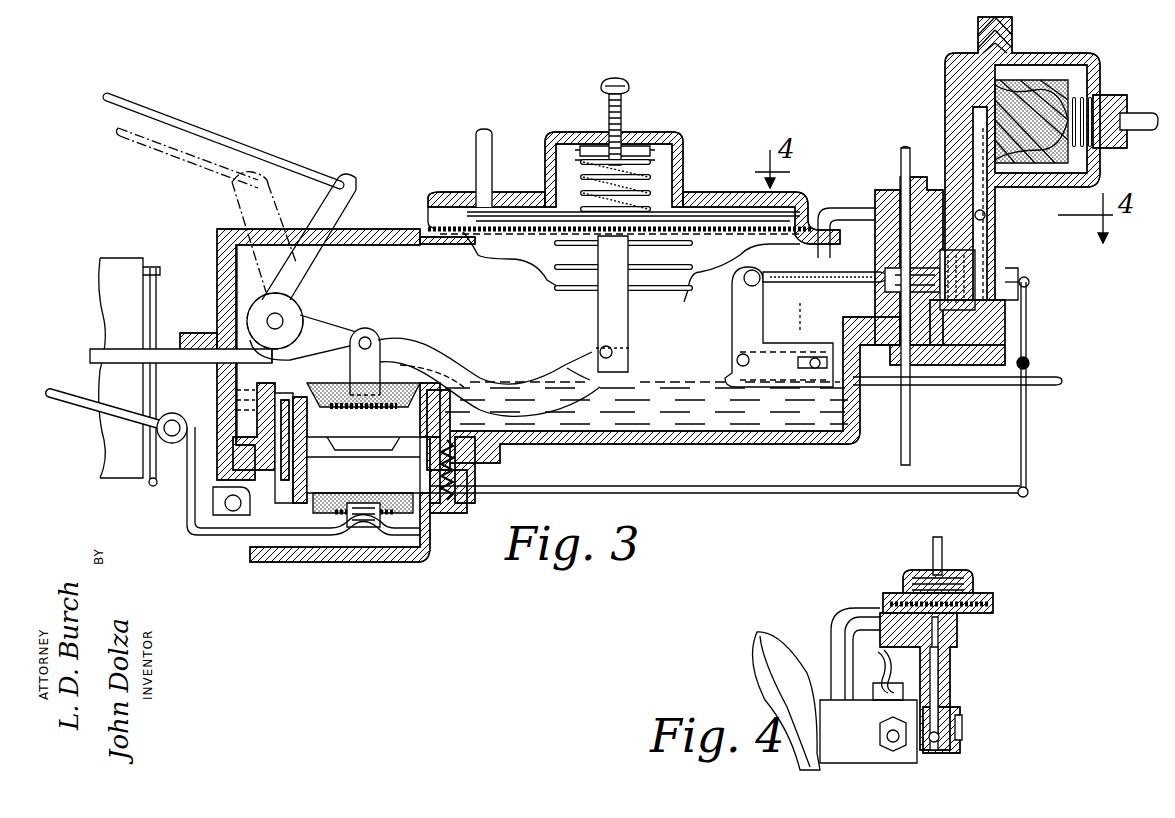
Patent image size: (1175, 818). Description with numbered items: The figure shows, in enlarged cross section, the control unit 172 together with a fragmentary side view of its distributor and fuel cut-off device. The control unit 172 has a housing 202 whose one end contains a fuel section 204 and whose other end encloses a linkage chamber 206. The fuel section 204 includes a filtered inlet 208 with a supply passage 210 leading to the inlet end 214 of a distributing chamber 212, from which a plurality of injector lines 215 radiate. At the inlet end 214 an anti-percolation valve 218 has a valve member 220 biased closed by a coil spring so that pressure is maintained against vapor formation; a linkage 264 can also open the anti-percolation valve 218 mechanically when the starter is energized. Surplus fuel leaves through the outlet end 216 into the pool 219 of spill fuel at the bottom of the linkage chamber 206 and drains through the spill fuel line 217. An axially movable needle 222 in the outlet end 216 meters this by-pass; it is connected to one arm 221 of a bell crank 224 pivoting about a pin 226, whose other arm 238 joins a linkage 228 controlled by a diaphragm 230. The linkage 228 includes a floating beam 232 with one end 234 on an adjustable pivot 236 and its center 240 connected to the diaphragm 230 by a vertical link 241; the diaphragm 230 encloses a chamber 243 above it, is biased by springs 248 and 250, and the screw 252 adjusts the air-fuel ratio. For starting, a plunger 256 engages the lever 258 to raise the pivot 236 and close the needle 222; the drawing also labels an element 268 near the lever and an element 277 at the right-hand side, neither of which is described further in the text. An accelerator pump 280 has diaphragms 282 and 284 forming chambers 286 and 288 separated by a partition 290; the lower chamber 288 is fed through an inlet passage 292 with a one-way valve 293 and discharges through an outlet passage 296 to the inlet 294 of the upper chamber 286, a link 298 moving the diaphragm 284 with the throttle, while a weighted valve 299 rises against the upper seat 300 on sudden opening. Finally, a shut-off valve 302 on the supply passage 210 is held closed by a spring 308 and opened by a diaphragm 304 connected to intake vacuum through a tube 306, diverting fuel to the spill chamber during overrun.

In FIG. 3, the control unit 172 is at (690, 152).
In FIG. 3, the housing 202 is at (818, 230).
In FIG. 3, the fuel section 204 is at (937, 193).
In FIG. 3, the linkage chamber 206 is at (418, 245).
In FIG. 3, the filtered inlet 208 is at (1082, 85).
In FIG. 3, the supply passage 210 is at (976, 190).
In FIG. 3, the distributing chamber 212 is at (890, 292).
In FIG. 3, the inlet end 214 is at (960, 305).
In FIG. 3, the injector lines 215 is at (901, 162).
In FIG. 3, the outlet end 216 is at (873, 320).
In FIG. 3, the spill fuel line 217 is at (1023, 389).
In FIG. 3, the anti-percolation valve 218 is at (1032, 280).
In FIG. 3, the pool of spill fuel 219 is at (716, 436).
In FIG. 3, the valve member 220 is at (955, 272).
In FIG. 3, the arm 221 is at (744, 278).
In FIG. 3, the needle 222 is at (810, 285).
In FIG. 3, the bell crank 224 is at (732, 319).
In FIG. 3, the pin 226 is at (737, 360).
In FIG. 3, the linkage 228 is at (592, 346).
In FIG. 3, the diaphragm 230 is at (455, 215).
In FIG. 3, the floating beam 232 is at (592, 395).
In FIG. 3, the end 234 is at (445, 340).
In FIG. 3, the adjustable pivot 236 is at (368, 338).
In FIG. 3, the arm 238 is at (800, 385).
In FIG. 3, the center 240 is at (580, 372).
In FIG. 3, the vertical link 241 is at (615, 326).
In FIG. 3, the chamber 243 is at (658, 150).
In FIG. 3, the spring 248 is at (558, 160).
In FIG. 3, the spring 250 is at (560, 275).
In FIG. 3, the screw 252 is at (625, 84).
In FIG. 3, the plunger 256 is at (104, 352).
In FIG. 3, the lever 258 is at (345, 185).
In FIG. 3, the linkage 264 is at (800, 494).
In FIG. 3, the throttle rod 268 is at (250, 150).
In FIG. 3, the tube 277 is at (1032, 378).
In FIG. 3, the accelerator pump 280 is at (432, 518).
In FIG. 3, the diaphragm 282 is at (415, 412).
In FIG. 3, the diaphragm 284 is at (375, 520).
In FIG. 3, the upper chamber 286 is at (365, 455).
In FIG. 3, the lower chamber 288 is at (370, 414).
In FIG. 3, the partition 290 is at (360, 452).
In FIG. 3, the inlet passage 292 is at (470, 398).
In FIG. 3, the one-way valve 293 is at (467, 492).
In FIG. 3, the inlet 294 is at (310, 405).
In FIG. 3, the outlet passage 296 is at (282, 493).
In FIG. 3, the link 298 is at (222, 530).
In FIG. 3, the valve 299 is at (254, 426).
In FIG. 3, the upper seat 300 is at (300, 318).
In FIG. 4, the shut-off valve 302 is at (955, 647).
In FIG. 4, the diaphragm 304 is at (980, 610).
In FIG. 4, the tube 306 is at (933, 548).
In FIG. 4, the spring 308 is at (968, 585).